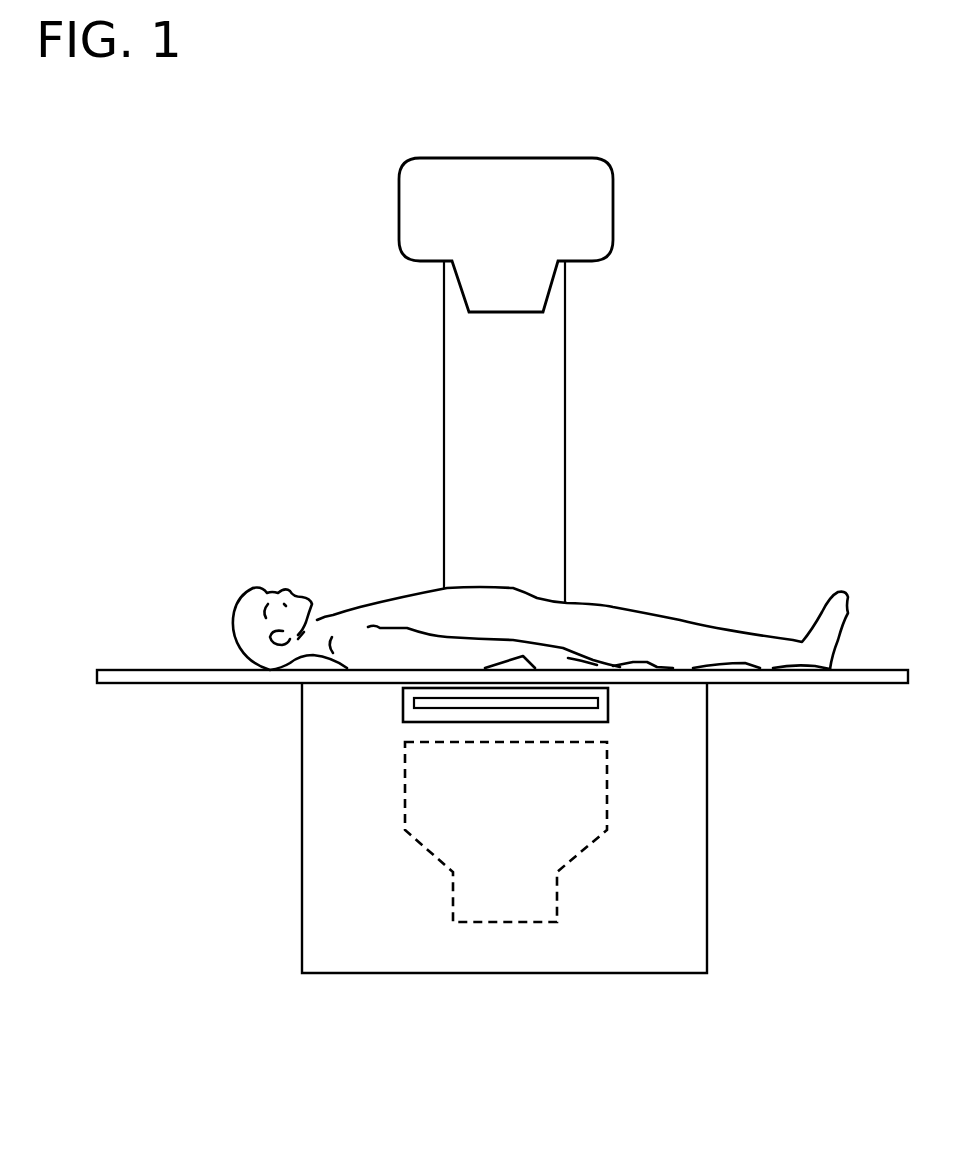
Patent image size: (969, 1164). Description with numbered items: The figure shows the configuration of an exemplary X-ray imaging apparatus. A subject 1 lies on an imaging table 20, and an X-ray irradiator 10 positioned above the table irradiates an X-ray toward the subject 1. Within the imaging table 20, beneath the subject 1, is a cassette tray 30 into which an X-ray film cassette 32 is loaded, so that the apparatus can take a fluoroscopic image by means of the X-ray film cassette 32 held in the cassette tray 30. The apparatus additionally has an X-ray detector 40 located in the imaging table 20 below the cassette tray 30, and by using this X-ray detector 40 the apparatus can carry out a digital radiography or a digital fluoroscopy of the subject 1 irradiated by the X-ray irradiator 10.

The subject 1 is at (243, 590).
The X-ray irradiator 10 is at (607, 231).
The imaging table 20 is at (302, 750).
The cassette tray 30 is at (608, 697).
The X-ray film cassette 32 is at (567, 703).
The X-ray detector 40 is at (607, 788).